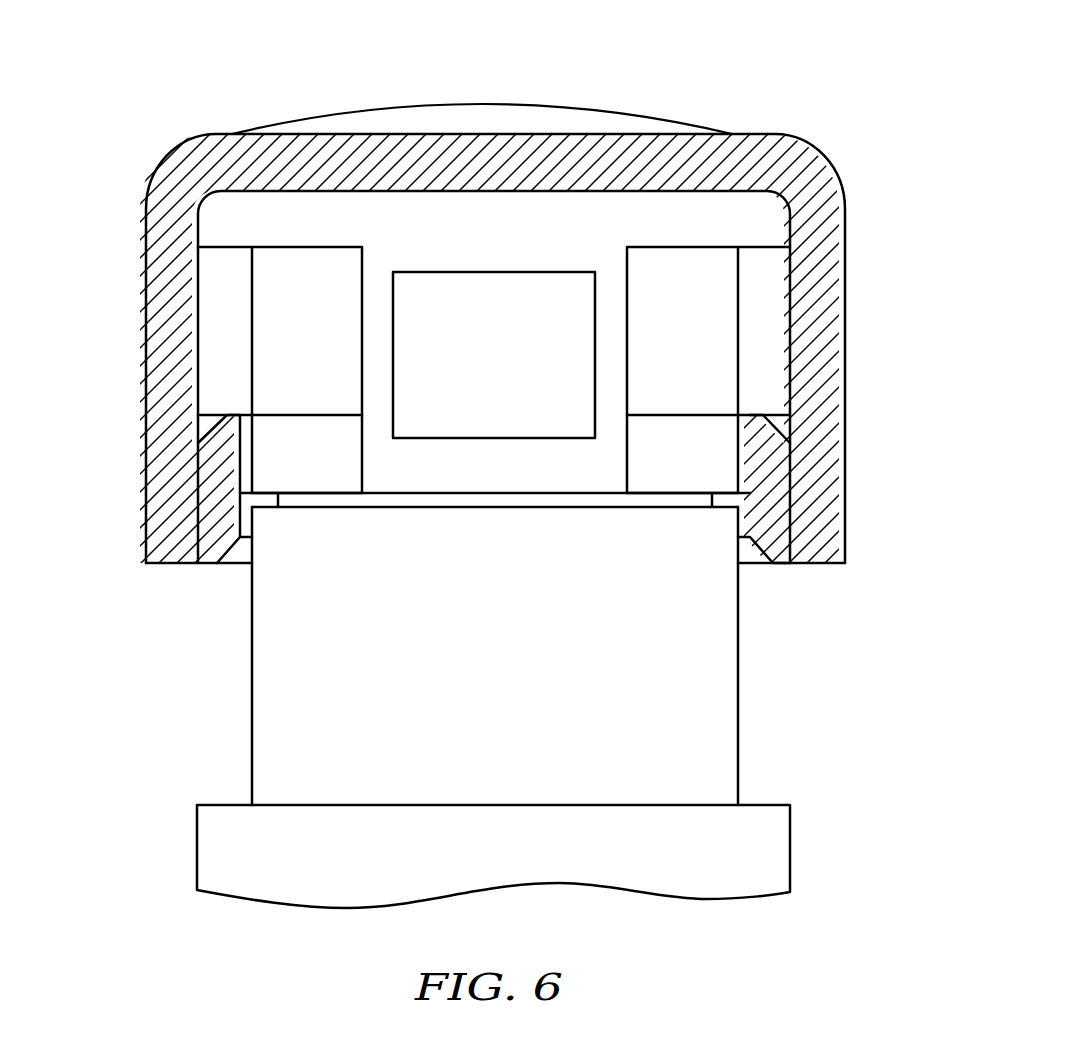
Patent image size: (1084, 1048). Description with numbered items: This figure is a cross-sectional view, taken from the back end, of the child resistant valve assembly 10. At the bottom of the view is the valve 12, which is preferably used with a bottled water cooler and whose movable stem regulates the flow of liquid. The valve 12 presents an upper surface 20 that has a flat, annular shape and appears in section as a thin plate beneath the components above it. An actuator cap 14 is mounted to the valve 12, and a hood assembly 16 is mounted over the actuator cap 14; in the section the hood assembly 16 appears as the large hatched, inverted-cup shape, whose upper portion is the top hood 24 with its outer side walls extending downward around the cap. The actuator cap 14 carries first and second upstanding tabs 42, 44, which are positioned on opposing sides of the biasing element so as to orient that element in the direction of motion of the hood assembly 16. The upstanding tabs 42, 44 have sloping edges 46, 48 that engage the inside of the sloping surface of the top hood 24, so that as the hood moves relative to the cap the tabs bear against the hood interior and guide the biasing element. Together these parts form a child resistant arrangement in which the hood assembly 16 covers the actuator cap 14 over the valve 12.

The child resistant valve assembly 10 is at (175, 108).
The valve 12 is at (252, 650).
The actuator cap 14 is at (578, 217).
The hood assembly 16 is at (846, 370).
The upper surface 20 is at (675, 493).
The top hood 24 is at (846, 298).
The first upstanding tab 42 is at (362, 301).
The second upstanding tab 44 is at (627, 304).
The sloping edge 46 is at (377, 355).
The sloping edge 48 is at (612, 356).